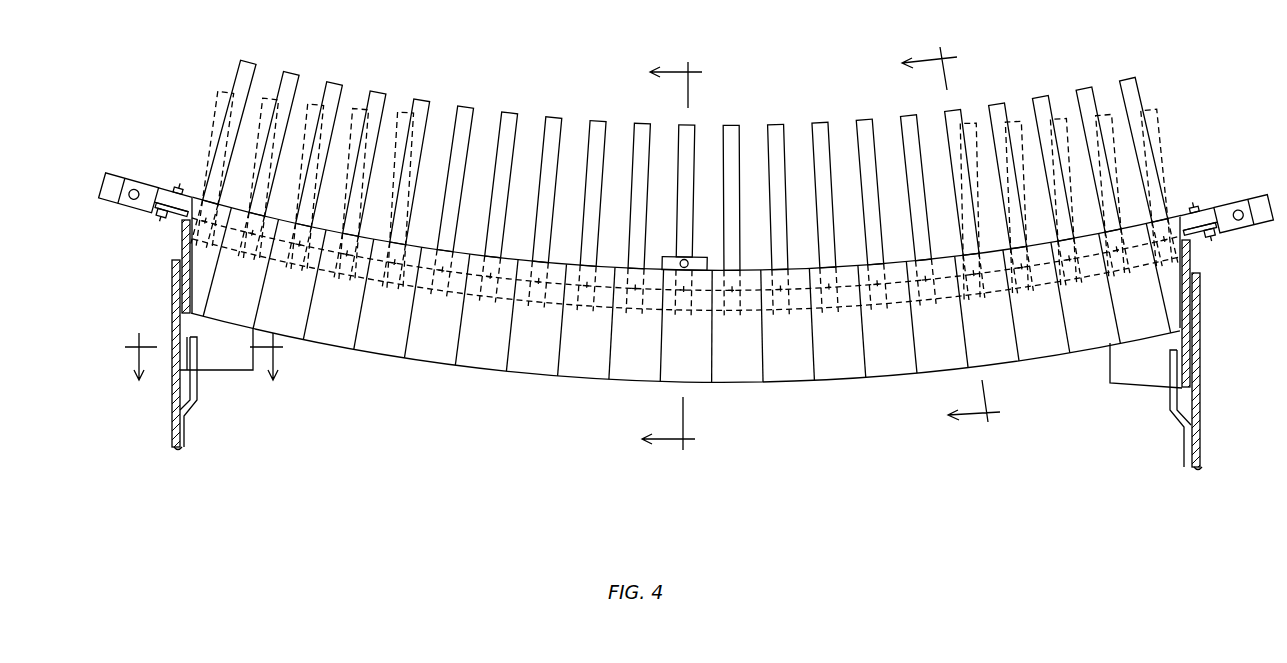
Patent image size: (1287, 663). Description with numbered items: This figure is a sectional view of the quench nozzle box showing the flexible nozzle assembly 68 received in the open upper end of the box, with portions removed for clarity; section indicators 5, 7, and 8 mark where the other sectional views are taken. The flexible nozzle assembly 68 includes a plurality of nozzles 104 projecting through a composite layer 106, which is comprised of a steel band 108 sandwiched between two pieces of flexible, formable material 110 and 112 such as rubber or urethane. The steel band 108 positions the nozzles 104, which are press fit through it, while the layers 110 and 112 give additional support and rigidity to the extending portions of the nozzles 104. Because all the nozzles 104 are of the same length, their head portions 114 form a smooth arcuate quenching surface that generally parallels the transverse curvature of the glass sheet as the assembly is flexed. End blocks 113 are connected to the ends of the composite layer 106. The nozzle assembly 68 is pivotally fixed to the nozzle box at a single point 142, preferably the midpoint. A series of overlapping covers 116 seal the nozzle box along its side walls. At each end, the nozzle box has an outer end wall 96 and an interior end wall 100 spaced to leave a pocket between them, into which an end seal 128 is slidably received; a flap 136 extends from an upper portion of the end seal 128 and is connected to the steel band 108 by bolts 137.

The flexible nozzle assembly 68 is at (204, 116).
The nozzles 104 is at (297, 92).
The head portions 114 is at (390, 98).
The composite layer 106 is at (588, 410).
The steel band 108 is at (552, 305).
The flexible, formable material 110 is at (607, 310).
The flexible, formable material 112 is at (508, 303).
The single point 142 is at (688, 266).
The overlapping covers 116 is at (923, 368).
The end blocks 113 is at (137, 183).
The bolts 137 is at (180, 187).
The flap 136 is at (168, 220).
The end walls 96 is at (172, 417).
The interior end walls 100 is at (192, 400).
The end seal 128 is at (1140, 388).
The section line 5 is at (944, 236).
The section line 7 is at (204, 368).
The section line 8 is at (663, 254).